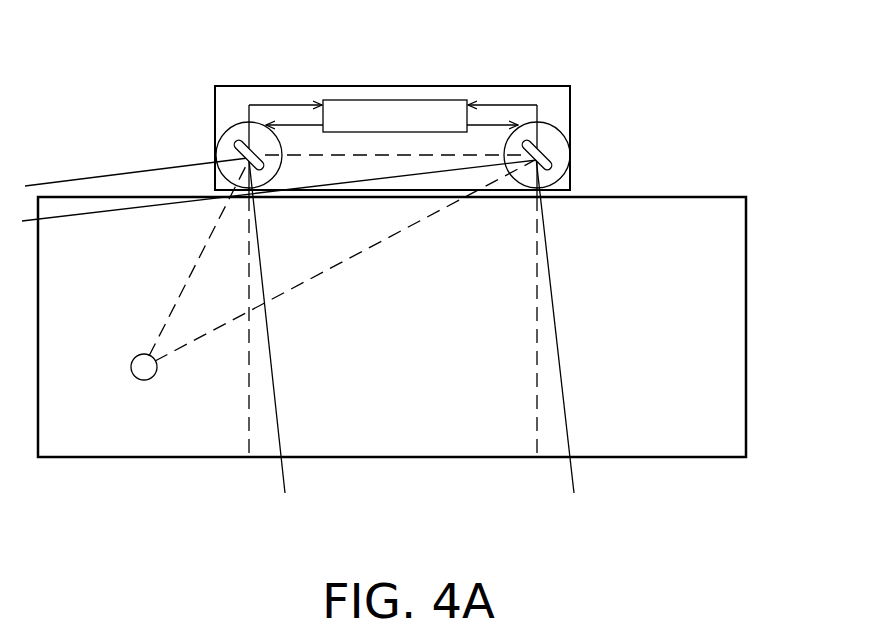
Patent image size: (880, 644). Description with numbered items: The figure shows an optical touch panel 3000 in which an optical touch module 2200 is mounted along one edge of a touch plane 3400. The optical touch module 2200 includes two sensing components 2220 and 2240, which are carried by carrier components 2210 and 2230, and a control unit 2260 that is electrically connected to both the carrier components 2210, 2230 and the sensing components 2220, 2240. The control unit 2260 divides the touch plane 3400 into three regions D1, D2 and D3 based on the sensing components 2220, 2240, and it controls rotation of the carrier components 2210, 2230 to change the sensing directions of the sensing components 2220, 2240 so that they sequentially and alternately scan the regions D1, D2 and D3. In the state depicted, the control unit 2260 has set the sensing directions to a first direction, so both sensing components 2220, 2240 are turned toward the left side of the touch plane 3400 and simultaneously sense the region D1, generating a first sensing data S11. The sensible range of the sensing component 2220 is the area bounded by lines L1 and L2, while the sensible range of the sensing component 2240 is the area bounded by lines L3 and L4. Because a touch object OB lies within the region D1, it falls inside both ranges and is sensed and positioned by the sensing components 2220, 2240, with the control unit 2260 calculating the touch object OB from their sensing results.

The optical touch panel 3000 is at (810, 544).
The touch plane 3400 is at (747, 307).
The optical touch module 2200 is at (571, 108).
The carrier component 2210 is at (569, 172).
The sensing component 2220 is at (566, 146).
The carrier component 2230 is at (238, 122).
The sensing component 2240 is at (233, 142).
The control unit 2260 is at (421, 100).
The first sensing data S11 is at (288, 103).
The line L1 is at (558, 340).
The line L2 is at (71, 222).
The line L3 is at (271, 344).
The line L4 is at (77, 178).
The touch object OB is at (158, 365).
The region D1 is at (190, 327).
The region D2 is at (395, 416).
The region D3 is at (597, 327).